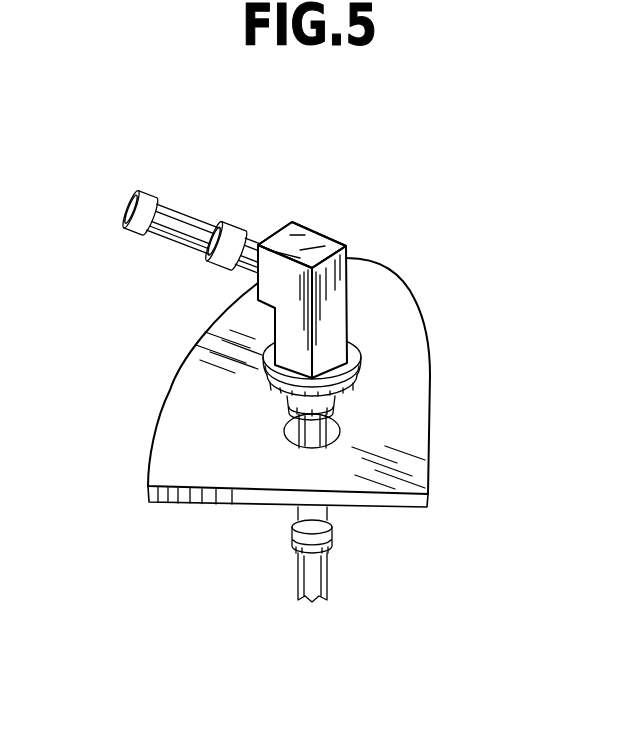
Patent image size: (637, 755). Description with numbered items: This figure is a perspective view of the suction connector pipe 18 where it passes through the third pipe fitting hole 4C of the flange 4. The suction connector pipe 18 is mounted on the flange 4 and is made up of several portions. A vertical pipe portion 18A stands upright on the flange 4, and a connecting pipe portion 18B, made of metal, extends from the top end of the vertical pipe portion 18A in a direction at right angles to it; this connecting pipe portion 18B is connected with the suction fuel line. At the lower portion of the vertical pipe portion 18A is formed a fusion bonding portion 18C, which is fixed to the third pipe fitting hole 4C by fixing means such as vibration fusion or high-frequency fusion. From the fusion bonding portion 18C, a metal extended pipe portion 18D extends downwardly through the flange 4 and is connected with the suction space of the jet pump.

The flange 4 is at (403, 300).
The third pipe fitting hole 4C is at (340, 431).
The suction connector pipe 18 is at (290, 222).
The vertical pipe portion 18A is at (334, 242).
The connecting pipe portion 18B is at (188, 243).
The fusion bonding portion 18C is at (288, 401).
The extended pipe portion 18D is at (318, 577).